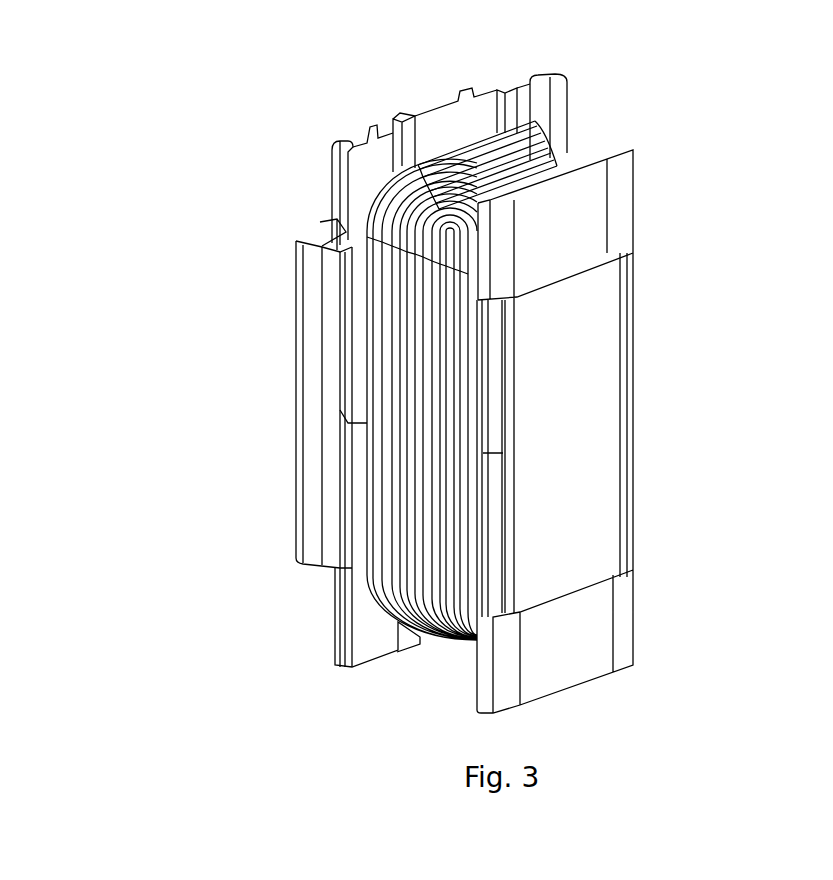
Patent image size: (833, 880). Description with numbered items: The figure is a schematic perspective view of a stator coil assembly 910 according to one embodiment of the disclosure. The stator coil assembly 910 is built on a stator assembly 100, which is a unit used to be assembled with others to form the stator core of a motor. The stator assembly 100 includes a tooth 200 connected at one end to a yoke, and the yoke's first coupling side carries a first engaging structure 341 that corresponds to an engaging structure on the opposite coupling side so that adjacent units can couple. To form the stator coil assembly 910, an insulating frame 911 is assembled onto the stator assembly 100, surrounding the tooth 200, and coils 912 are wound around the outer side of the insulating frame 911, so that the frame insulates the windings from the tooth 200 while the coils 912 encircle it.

The stator coil assembly 910 is at (143, 57).
The insulating frame 911 is at (580, 207).
The coils 912 is at (549, 161).
The stator assembly 100 is at (322, 241).
The tooth 200 is at (587, 322).
The first engaging structure 341 is at (298, 333).